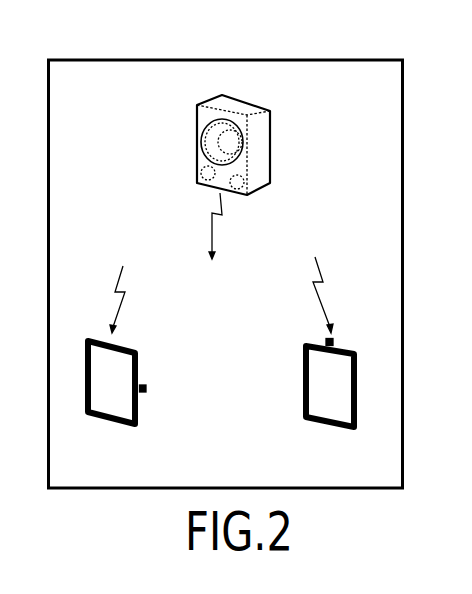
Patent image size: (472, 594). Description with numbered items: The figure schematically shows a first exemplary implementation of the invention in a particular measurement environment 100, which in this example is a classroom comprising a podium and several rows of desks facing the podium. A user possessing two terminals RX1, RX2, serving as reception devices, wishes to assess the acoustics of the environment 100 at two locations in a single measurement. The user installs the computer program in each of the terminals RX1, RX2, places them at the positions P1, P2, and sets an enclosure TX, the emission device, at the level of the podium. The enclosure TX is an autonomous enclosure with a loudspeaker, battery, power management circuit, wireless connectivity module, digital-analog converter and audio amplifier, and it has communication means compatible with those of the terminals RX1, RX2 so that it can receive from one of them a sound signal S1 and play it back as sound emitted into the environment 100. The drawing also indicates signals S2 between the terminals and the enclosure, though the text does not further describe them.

The environment 100 is at (230, 58).
The enclosure TX is at (252, 148).
The sound signal S1 is at (216, 246).
The second sound signal transmitted from receiver S2 is at (222, 276).
The terminal RX1 is at (120, 430).
The terminal RX2 is at (335, 432).
The position P1 is at (147, 390).
The position P2 is at (334, 337).